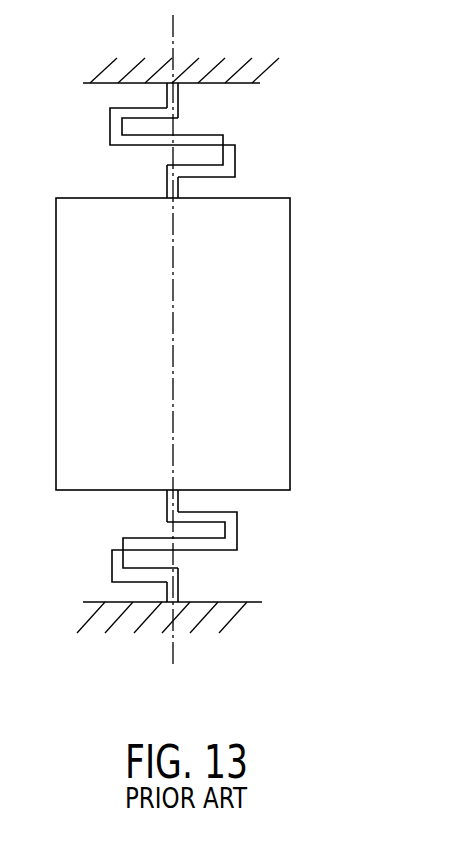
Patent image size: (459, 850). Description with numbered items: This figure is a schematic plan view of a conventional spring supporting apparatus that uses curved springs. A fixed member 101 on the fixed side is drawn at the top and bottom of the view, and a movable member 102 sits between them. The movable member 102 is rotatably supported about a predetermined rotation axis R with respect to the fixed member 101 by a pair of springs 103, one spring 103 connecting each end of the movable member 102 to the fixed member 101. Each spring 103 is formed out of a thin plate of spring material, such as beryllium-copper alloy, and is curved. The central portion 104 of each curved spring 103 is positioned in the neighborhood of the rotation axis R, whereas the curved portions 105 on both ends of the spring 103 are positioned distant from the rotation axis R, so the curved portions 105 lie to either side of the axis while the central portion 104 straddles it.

The rotation axis R is at (174, 34).
The fixed member 101 is at (247, 86).
The movable member 102 is at (291, 362).
The spring 103 is at (202, 342).
The central portion 104 is at (212, 137).
The curved portion 105 is at (110, 126).